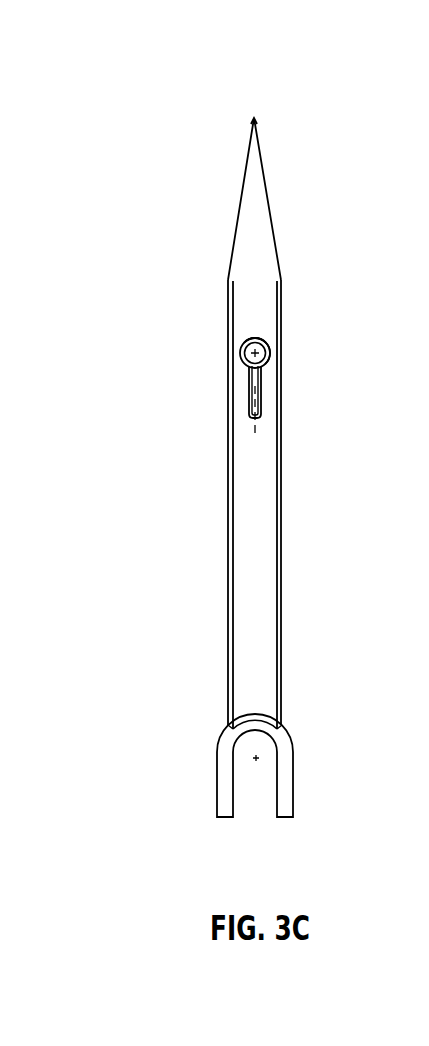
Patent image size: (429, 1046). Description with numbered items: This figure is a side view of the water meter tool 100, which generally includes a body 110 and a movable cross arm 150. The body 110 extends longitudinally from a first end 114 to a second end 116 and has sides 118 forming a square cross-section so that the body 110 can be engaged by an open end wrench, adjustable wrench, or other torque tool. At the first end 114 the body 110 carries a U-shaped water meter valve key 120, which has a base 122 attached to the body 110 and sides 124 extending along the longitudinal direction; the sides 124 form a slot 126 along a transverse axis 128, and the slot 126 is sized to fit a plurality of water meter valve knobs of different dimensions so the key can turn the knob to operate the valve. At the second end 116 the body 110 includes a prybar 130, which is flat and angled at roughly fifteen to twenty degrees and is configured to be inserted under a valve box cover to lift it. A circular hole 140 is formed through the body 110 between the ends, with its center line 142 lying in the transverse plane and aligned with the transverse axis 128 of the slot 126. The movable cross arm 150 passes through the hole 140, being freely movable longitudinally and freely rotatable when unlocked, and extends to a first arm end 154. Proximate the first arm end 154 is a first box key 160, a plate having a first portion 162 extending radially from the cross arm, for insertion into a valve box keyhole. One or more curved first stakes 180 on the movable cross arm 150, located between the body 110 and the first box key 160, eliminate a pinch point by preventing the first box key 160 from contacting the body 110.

The water meter tool 100 is at (352, 100).
The body 110 is at (300, 521).
The first end 114 is at (283, 818).
The second end 116 is at (254, 117).
The sides 118 is at (260, 638).
The water meter valve key 120 is at (192, 800).
The base 122 is at (270, 732).
The sides 124 is at (284, 788).
The slot 126 is at (260, 805).
The transverse axis 128 is at (252, 757).
The prybar 130 is at (255, 194).
The hole 140 is at (242, 346).
The center line 142 is at (268, 358).
The movable cross arm 150 is at (271, 326).
The first arm end 154 is at (243, 362).
The first box key 160 is at (271, 409).
The first portion 162 is at (250, 394).
The first stakes 180 is at (253, 338).